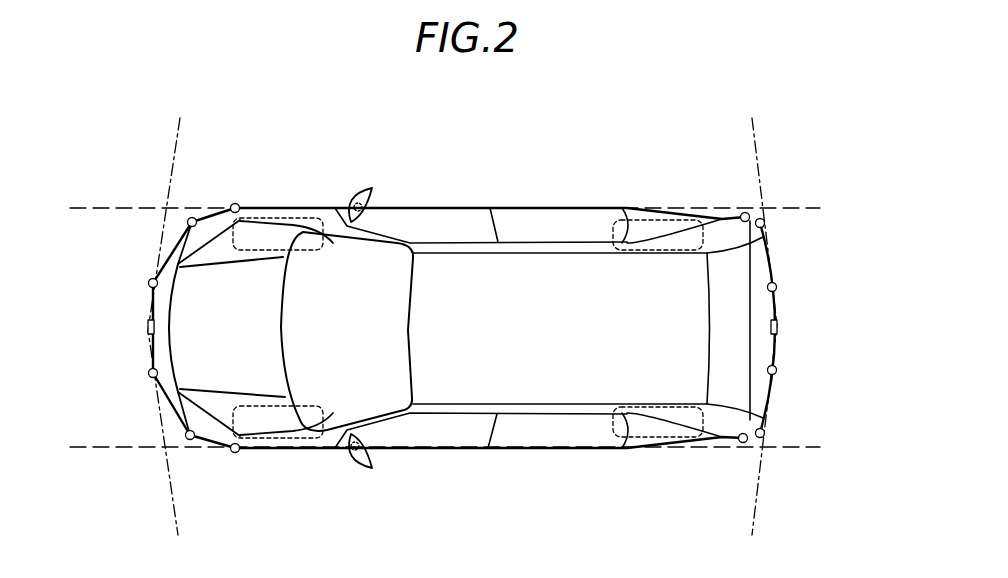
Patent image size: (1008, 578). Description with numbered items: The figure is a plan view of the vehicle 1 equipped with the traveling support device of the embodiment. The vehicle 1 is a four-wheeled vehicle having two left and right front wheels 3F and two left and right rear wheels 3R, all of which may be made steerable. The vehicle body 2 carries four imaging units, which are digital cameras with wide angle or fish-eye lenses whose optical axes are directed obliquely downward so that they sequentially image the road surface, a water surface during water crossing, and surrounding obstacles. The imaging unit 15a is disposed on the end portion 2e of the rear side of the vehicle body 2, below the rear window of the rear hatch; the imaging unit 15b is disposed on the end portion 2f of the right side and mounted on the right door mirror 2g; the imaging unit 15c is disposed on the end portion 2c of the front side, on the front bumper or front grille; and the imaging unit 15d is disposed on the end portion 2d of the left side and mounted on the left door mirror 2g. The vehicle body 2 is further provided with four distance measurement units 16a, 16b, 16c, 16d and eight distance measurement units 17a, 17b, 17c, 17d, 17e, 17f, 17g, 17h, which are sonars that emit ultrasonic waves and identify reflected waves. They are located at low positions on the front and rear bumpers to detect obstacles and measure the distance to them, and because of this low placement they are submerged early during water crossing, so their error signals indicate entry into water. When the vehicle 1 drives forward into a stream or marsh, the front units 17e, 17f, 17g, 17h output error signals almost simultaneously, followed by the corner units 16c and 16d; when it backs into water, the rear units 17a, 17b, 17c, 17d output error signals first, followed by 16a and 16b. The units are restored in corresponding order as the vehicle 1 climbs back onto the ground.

The vehicle 1 is at (577, 126).
The vehicle body 2 is at (727, 203).
The end portion of the front side of the vehicle body 2c is at (147, 343).
The end portion of the left side of the vehicle body 2d is at (553, 449).
The end portion of the rear side of the vehicle body 2e is at (778, 345).
The end portion of the right side of the vehicle body 2f is at (570, 207).
The door mirror 2g is at (373, 189).
The front wheels 3F is at (279, 217).
The rear wheels 3R is at (659, 218).
The imaging unit 15a is at (778, 325).
The imaging unit 15b is at (357, 201).
The imaging unit 15c is at (147, 325).
The imaging unit 15d is at (355, 461).
The distance measurement unit 16a is at (742, 443).
The distance measurement unit 16b is at (745, 212).
The distance measurement unit 16c is at (236, 203).
The distance measurement unit 16d is at (235, 453).
The distance measurement unit 17a is at (765, 433).
The distance measurement unit 17b is at (777, 370).
The distance measurement unit 17c is at (777, 286).
The distance measurement unit 17d is at (765, 221).
The distance measurement unit 17e is at (188, 222).
The distance measurement unit 17f is at (149, 283).
The distance measurement unit 17g is at (149, 373).
The distance measurement unit 17h is at (186, 435).